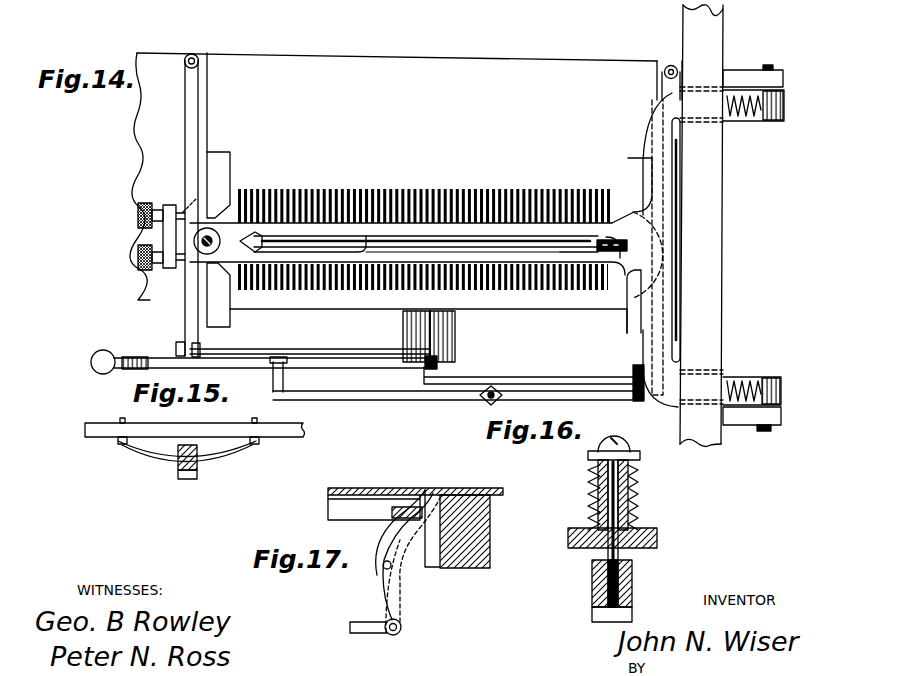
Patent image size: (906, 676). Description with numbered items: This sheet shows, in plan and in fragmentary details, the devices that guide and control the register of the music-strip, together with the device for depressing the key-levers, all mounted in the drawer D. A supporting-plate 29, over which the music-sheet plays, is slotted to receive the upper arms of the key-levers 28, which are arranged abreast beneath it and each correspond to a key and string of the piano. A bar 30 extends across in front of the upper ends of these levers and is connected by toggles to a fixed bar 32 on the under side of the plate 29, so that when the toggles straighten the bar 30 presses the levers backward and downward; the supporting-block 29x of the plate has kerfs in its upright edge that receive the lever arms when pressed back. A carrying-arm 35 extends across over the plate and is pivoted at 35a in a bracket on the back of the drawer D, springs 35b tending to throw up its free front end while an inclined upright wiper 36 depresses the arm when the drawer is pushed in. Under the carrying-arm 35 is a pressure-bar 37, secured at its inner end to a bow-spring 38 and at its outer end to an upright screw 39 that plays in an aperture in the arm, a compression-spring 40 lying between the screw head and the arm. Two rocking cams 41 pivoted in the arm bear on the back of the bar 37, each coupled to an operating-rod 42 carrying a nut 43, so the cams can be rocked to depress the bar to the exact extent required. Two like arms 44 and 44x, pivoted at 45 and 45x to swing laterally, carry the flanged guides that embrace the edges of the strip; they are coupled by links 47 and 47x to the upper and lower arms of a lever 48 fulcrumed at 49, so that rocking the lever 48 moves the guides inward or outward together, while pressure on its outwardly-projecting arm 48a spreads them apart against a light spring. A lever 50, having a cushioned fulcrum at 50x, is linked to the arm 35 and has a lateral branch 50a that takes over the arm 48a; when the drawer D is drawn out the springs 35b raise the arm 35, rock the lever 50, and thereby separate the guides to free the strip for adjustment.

In FIG. 17, the key-levers 28 is at (411, 568).
In FIG. 14, the supporting-plate 29 is at (406, 193).
In FIG. 17, the supporting-plate 29 is at (340, 489).
In FIG. 17, the supporting-block 29x is at (491, 546).
In FIG. 17, the bar 30 is at (391, 507).
In FIG. 14, the fixed bar 32 is at (325, 252).
In FIG. 14, the carrying-arm 35 is at (407, 241).
In FIG. 15, the carrying-arm 35 is at (224, 426).
In FIG. 16, the carrying-arm 35 is at (658, 541).
In FIG. 14, the pivot of carrying-arm 35a is at (785, 108).
In FIG. 14, the springs 35b is at (745, 118).
In FIG. 14, the inclined upright wiper 36 is at (463, 255).
In FIG. 15, the pressure-bar 37 is at (178, 462).
In FIG. 16, the pressure-bar 37 is at (592, 581).
In FIG. 15, the bow-spring 38 is at (211, 458).
In FIG. 14, the upright screw or stem 39 is at (212, 217).
In FIG. 16, the upright screw or stem 39 is at (628, 517).
In FIG. 16, the compression-spring 40 is at (640, 484).
In FIG. 14, the rocking cams 41 is at (341, 247).
In FIG. 14, the operating-rod 42 is at (555, 245).
In FIG. 14, the nuts 43 is at (157, 206).
In FIG. 14, the arm 44 is at (185, 132).
In FIG. 14, the arm 44x is at (661, 85).
In FIG. 14, the pivot 45 is at (191, 54).
In FIG. 14, the pivot 45x is at (668, 64).
In FIG. 14, the link 47 is at (335, 352).
In FIG. 14, the link 47x is at (600, 378).
In FIG. 14, the lever 48 is at (437, 365).
In FIG. 14, the outwardly-projecting arm 48a is at (158, 357).
In FIG. 14, the fulcrum 49 is at (300, 397).
In FIG. 14, the lever 50 is at (597, 401).
In FIG. 14, the lateral branch 50a is at (275, 358).
In FIG. 14, the cushioned fulcrum 50x is at (496, 390).
In FIG. 14, the drawer D is at (722, 240).